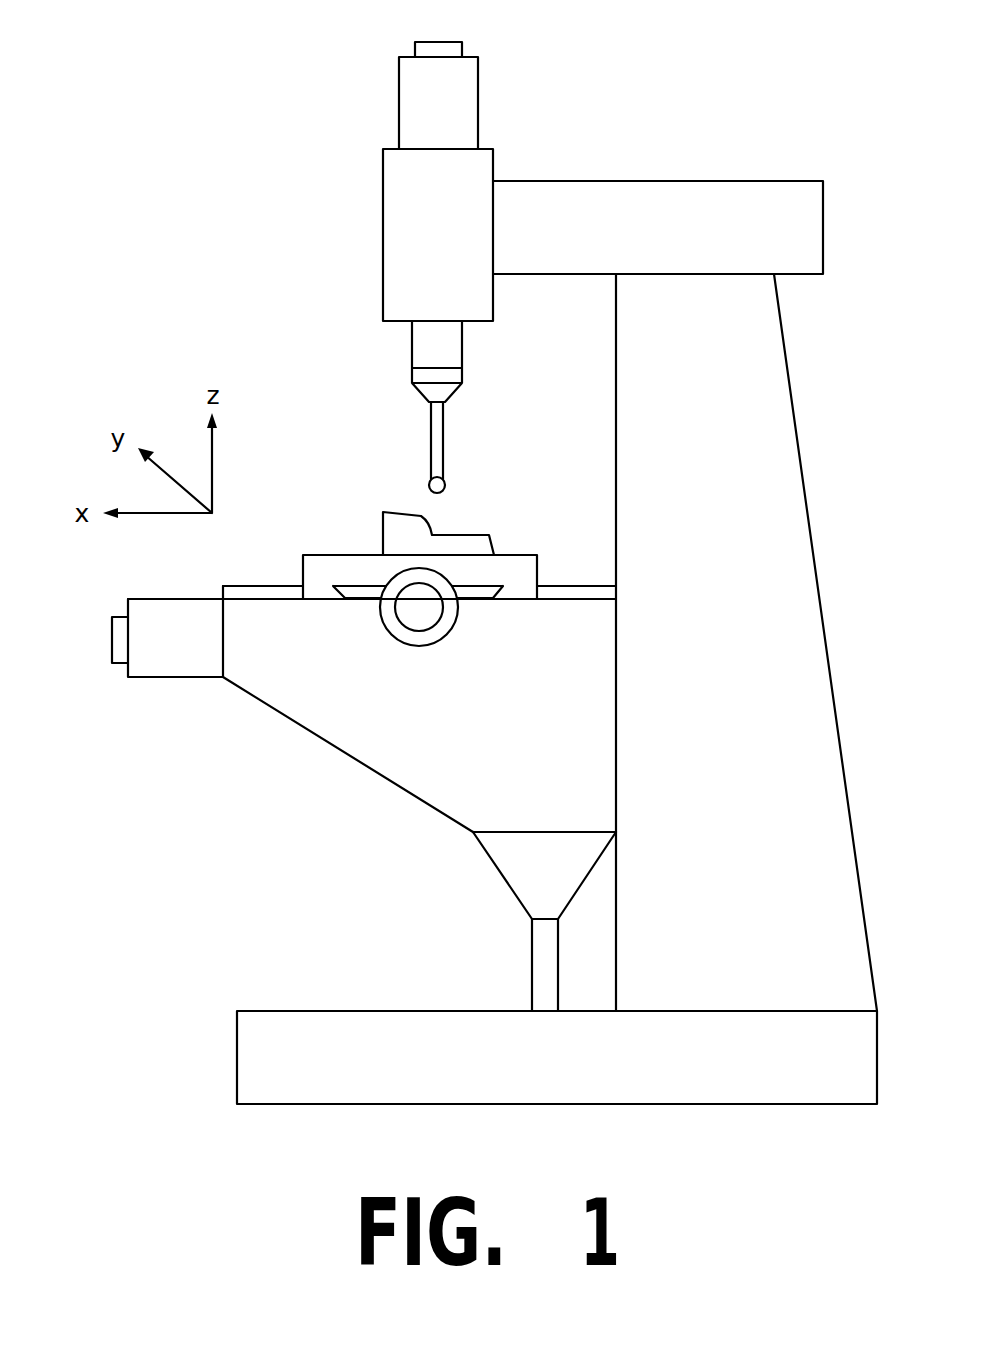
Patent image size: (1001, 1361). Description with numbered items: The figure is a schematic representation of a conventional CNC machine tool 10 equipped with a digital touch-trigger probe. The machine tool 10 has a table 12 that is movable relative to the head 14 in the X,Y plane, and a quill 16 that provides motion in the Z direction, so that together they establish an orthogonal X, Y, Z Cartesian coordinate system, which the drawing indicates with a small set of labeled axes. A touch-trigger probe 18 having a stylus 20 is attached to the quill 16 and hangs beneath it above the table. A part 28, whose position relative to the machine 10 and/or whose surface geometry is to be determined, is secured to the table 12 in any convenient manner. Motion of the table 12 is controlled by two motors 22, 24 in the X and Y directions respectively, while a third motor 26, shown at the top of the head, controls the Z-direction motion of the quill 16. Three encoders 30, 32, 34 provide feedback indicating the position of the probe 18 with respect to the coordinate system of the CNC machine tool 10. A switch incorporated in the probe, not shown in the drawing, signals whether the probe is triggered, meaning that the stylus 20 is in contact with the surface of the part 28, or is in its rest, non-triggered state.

The CNC machine tool 10 is at (697, 148).
The table 12 is at (334, 555).
The head 14 is at (383, 221).
The quill 16 is at (412, 347).
The touch-trigger probe 18 is at (444, 402).
The stylus 20 is at (442, 482).
The motor 22 is at (391, 635).
The motor 24 is at (202, 598).
The motor 26 is at (399, 91).
The part 28 is at (490, 551).
The encoder 30 is at (418, 632).
The encoder 32 is at (112, 636).
The encoder 34 is at (453, 40).